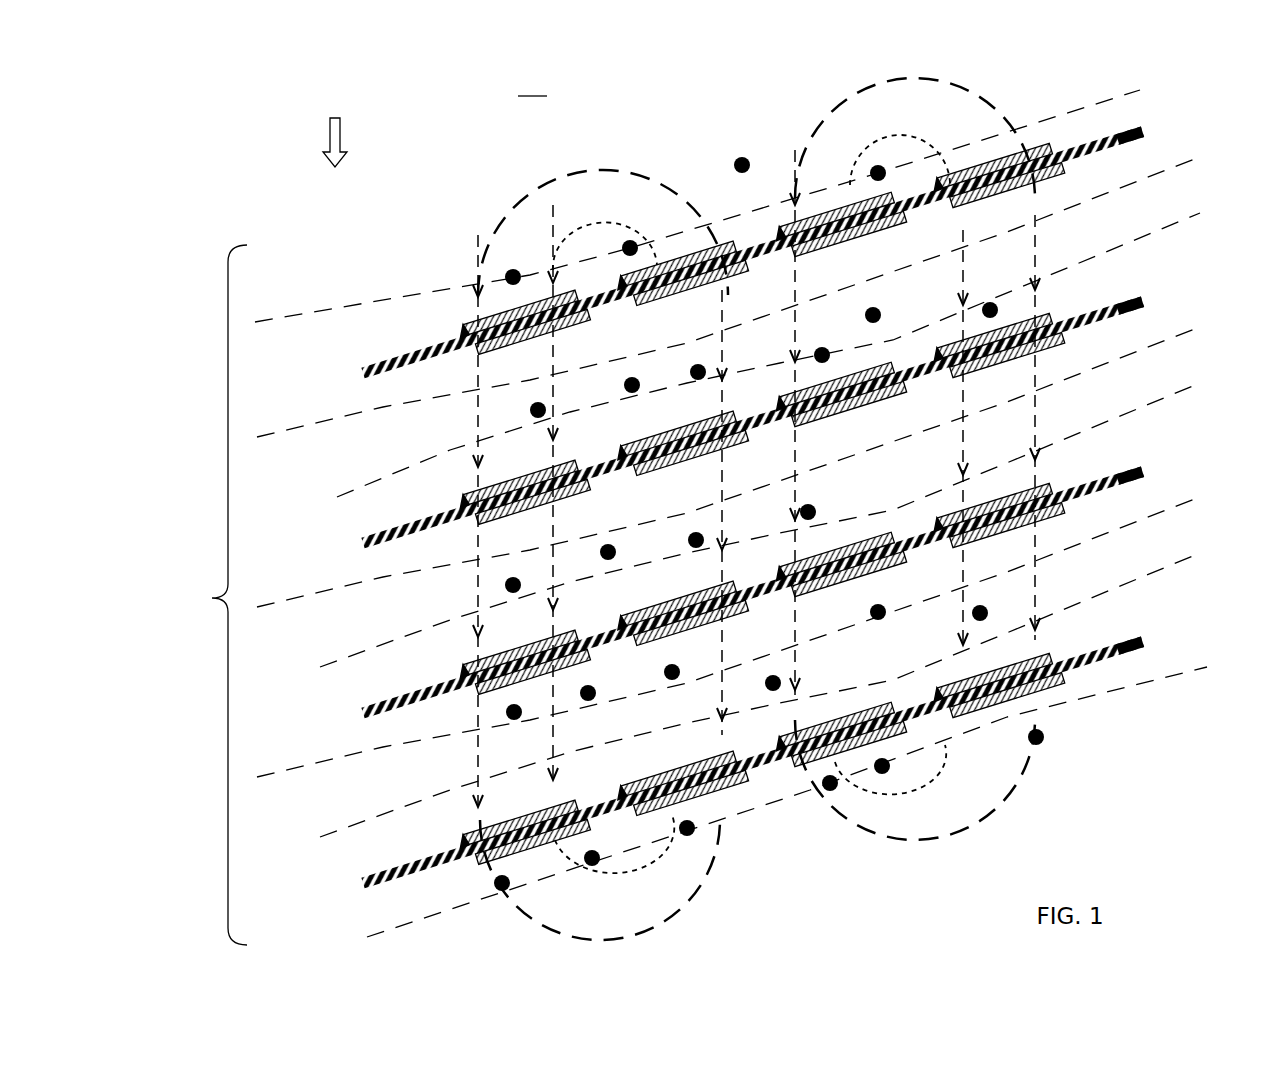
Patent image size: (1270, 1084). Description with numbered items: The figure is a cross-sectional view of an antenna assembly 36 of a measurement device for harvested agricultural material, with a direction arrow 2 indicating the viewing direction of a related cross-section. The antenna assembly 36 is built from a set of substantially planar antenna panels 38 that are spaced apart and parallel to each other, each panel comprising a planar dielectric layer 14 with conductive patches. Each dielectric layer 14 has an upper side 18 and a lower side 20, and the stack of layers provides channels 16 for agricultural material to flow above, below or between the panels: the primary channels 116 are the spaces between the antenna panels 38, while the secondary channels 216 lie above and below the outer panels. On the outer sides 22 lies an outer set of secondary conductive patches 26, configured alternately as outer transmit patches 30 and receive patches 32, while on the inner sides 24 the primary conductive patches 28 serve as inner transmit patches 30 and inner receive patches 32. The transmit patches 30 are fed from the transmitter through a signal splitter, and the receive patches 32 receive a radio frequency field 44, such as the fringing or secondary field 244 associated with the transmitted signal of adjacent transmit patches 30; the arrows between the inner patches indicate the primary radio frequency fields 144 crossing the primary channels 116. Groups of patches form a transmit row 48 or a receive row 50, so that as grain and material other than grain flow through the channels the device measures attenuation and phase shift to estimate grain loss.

The viewing direction 2 is at (335, 128).
The planar dielectric layer 14 is at (395, 372).
The channel 16 is at (211, 595).
The upper side 18 is at (604, 458).
The lower side 20 is at (652, 875).
The outer side 22 is at (842, 192).
The inner side 24 is at (842, 393).
The secondary conductive patch 26 is at (470, 324).
The primary conductive patch 28 is at (577, 323).
The transmit patch 30 is at (478, 344).
The receive patch 32 is at (772, 478).
The antenna assembly 36 is at (532, 82).
The planar antenna panel 38 is at (1140, 130).
The radio frequency field 44 is at (697, 188).
The transmit row 48 is at (558, 344).
The receive row 50 is at (508, 470).
The primary channel 116 is at (1098, 272).
The primary radio frequency field 144 is at (460, 410).
The secondary channel 216 is at (1098, 94).
The secondary field 244 is at (860, 123).